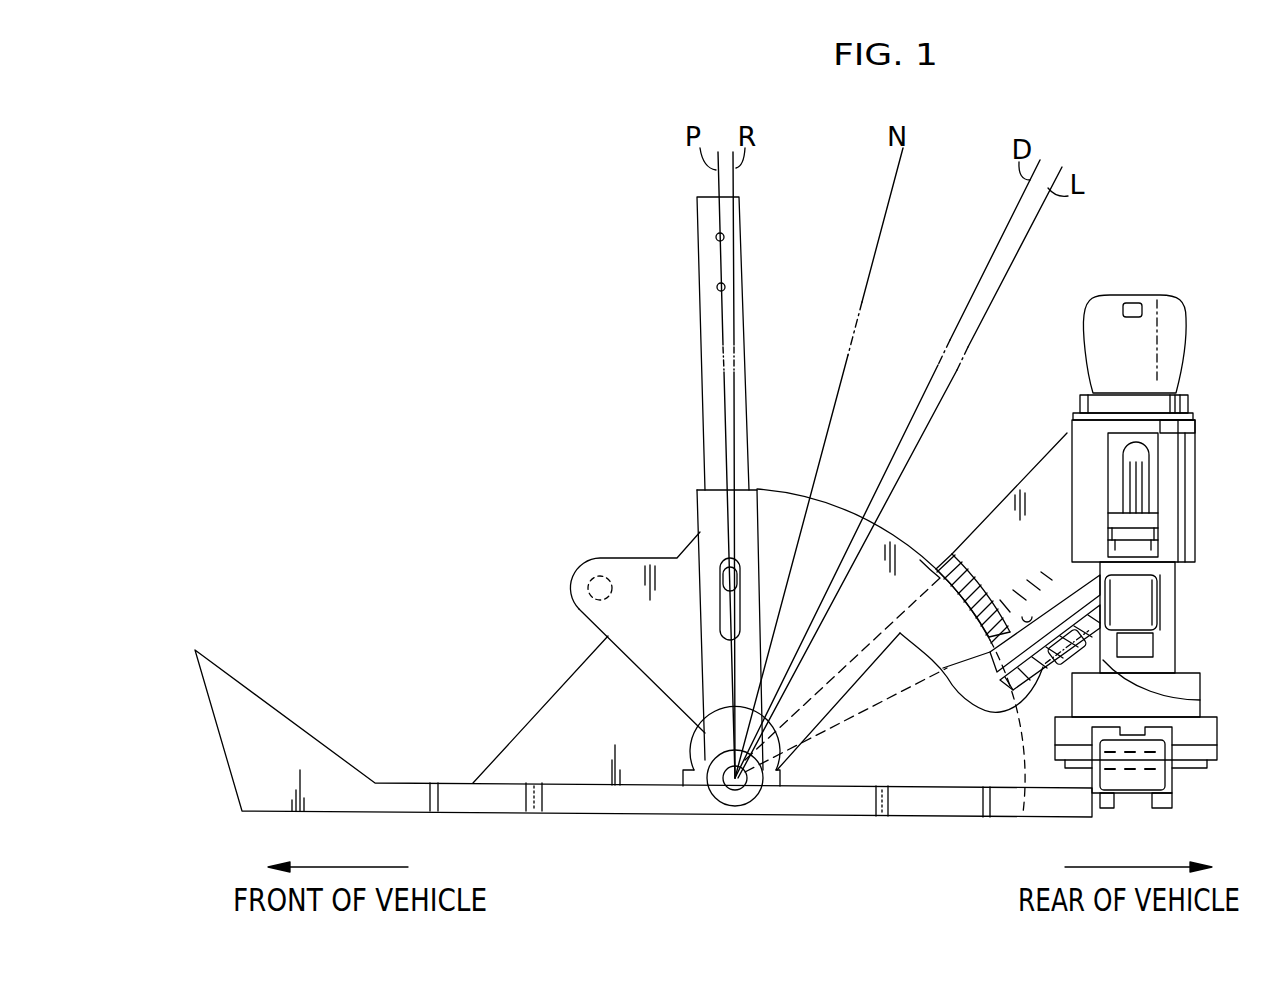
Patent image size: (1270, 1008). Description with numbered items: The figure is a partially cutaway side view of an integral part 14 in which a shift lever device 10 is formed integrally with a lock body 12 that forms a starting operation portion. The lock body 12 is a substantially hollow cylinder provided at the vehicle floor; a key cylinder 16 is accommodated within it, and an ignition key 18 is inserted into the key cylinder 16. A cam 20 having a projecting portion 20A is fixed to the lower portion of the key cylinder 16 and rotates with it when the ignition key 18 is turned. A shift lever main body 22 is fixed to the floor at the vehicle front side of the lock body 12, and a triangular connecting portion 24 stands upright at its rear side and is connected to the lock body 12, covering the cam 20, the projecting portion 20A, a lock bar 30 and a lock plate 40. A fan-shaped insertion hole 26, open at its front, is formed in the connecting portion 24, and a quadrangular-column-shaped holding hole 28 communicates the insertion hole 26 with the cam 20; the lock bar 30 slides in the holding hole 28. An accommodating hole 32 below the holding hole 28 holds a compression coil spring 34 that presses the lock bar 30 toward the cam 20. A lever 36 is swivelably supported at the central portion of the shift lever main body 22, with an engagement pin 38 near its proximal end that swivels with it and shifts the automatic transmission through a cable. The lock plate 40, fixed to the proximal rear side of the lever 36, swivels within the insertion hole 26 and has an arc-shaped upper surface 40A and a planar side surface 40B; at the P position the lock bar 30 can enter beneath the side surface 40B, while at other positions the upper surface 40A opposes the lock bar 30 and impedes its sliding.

The shift lever device 10 is at (557, 693).
The lock body 12 is at (1188, 503).
The integral part 14 is at (432, 268).
The key cylinder 16 is at (1190, 402).
The ignition key 18 is at (1167, 301).
The cam 20 is at (1160, 605).
The projecting portion 20A is at (1175, 586).
The shift lever main body 22 is at (455, 786).
The connecting portion 24 is at (1030, 474).
The insertion hole 26 is at (960, 600).
The holding hole 28 is at (1027, 615).
The lock bar 30 is at (1063, 627).
The accommodating hole 32 is at (1200, 698).
The compression coil spring 34 is at (1039, 685).
The lever 36 is at (697, 255).
The engagement pin 38 is at (597, 576).
The lock plate 40 is at (777, 490).
The upper surface 40A is at (938, 566).
The side surface 40B is at (947, 680).